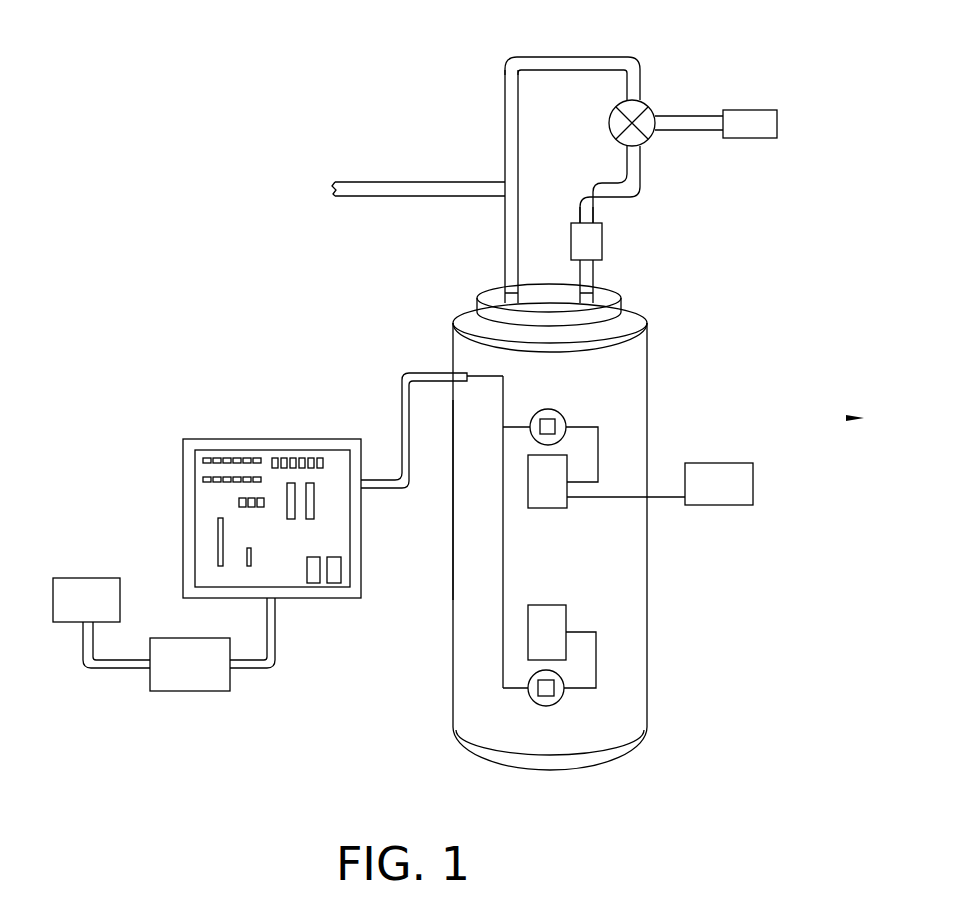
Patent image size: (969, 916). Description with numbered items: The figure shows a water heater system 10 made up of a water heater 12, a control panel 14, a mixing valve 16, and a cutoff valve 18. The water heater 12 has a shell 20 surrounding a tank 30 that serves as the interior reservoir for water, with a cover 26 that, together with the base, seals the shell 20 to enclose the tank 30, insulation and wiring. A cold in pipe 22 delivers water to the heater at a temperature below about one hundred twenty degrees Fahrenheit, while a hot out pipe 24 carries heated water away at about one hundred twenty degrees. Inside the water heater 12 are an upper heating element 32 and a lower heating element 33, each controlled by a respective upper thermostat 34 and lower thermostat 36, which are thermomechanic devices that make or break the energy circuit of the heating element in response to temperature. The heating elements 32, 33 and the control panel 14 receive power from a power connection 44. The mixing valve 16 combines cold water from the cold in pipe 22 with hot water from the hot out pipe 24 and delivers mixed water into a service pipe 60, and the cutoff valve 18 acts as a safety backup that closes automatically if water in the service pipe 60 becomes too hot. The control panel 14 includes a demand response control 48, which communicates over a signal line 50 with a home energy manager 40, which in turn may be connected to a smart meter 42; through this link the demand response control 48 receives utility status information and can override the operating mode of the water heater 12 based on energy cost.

The water heater system 10 is at (692, 365).
The water heater 12 is at (626, 541).
The control panel 14 is at (195, 505).
The mixing valve 16 is at (643, 103).
The cutoff valve 18 is at (750, 140).
The shell 20 is at (622, 686).
The cold in pipe 22 is at (512, 258).
The hot out pipe 24 is at (588, 275).
The cover 26 is at (628, 320).
The tank 30 is at (558, 552).
The upper heating element 32 is at (548, 418).
The lower heating element 33 is at (546, 698).
The upper thermostat 34 is at (548, 508).
The lower thermostat 36 is at (547, 605).
The home energy manager 40 is at (193, 691).
The smart meter 42 is at (85, 578).
The 240V power supply 44 is at (727, 463).
The demand response control 48 is at (333, 535).
The signal line 50 is at (568, 62).
The service pipe 60 is at (702, 120).